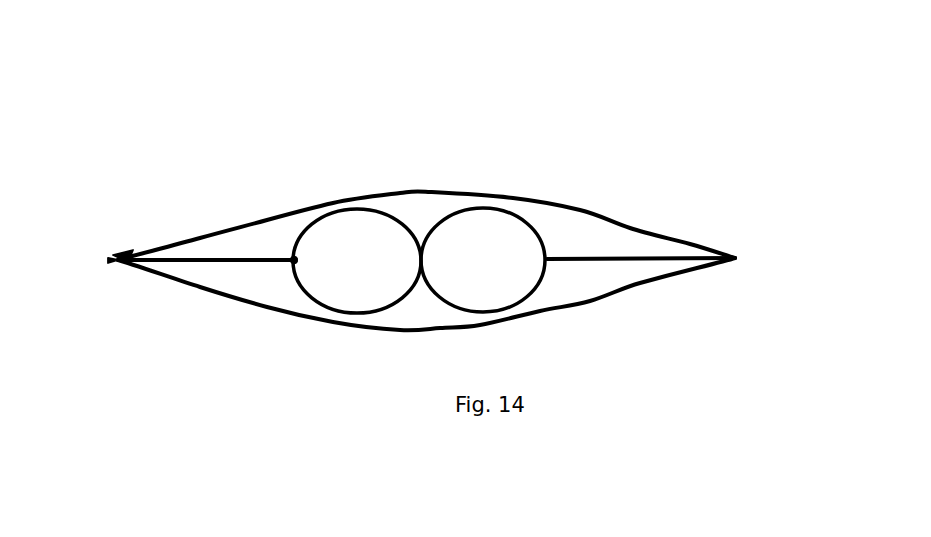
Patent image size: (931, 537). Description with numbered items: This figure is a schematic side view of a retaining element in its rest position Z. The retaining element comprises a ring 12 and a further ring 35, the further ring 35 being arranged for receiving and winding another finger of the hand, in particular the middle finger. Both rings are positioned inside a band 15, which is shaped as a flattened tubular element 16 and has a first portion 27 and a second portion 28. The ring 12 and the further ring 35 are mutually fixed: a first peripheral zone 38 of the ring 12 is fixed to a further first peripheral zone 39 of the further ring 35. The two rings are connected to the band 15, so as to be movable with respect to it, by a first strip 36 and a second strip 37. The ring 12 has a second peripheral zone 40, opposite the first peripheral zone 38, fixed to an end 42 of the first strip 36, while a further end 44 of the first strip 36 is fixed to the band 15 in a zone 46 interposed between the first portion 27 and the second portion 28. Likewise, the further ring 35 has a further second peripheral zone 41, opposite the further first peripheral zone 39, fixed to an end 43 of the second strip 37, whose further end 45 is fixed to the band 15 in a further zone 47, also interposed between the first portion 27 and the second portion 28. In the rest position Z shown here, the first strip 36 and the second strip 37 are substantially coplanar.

The ring 12 is at (352, 208).
The band 15 is at (247, 210).
The flattened tubular element 16 is at (345, 327).
The first portion 27 is at (607, 297).
The second portion 28 is at (448, 190).
The further ring 35 is at (528, 213).
The first strip 36 is at (218, 262).
The second strip 37 is at (645, 255).
The first peripheral zone 38 is at (422, 260).
The further first peripheral zone 39 is at (425, 257).
The second peripheral zone 40 is at (295, 259).
The further second peripheral zone 41 is at (540, 262).
The end of the first strip 42 is at (294, 262).
The end of the second strip 43 is at (548, 258).
The further end of the first strip 44 is at (120, 259).
The further end of the second strip 45 is at (735, 258).
The zone 46 is at (118, 258).
The further zone 47 is at (737, 258).
The rest position Z is at (645, 140).